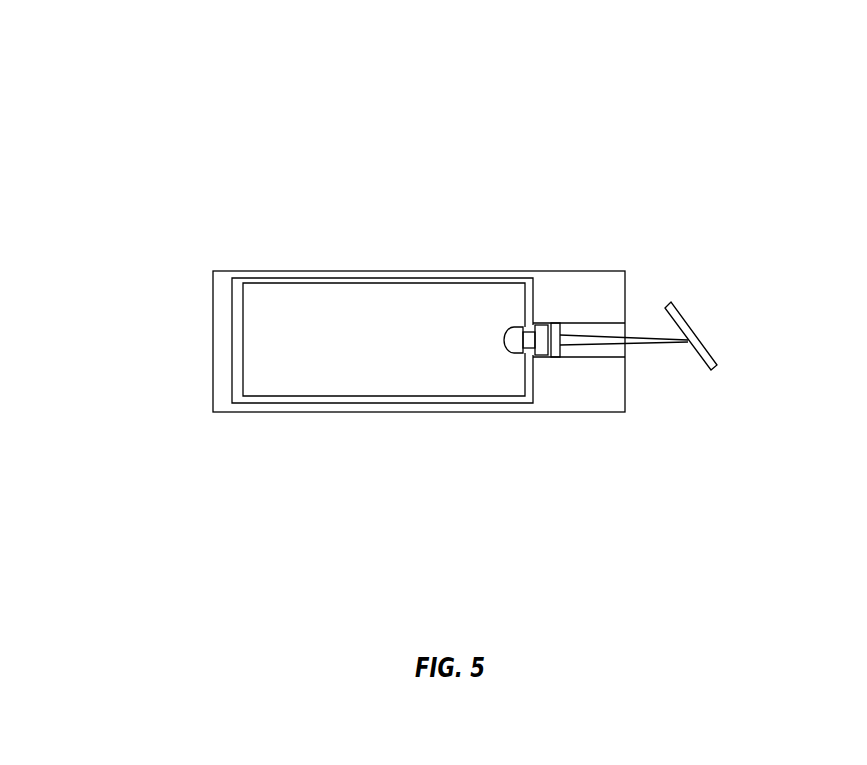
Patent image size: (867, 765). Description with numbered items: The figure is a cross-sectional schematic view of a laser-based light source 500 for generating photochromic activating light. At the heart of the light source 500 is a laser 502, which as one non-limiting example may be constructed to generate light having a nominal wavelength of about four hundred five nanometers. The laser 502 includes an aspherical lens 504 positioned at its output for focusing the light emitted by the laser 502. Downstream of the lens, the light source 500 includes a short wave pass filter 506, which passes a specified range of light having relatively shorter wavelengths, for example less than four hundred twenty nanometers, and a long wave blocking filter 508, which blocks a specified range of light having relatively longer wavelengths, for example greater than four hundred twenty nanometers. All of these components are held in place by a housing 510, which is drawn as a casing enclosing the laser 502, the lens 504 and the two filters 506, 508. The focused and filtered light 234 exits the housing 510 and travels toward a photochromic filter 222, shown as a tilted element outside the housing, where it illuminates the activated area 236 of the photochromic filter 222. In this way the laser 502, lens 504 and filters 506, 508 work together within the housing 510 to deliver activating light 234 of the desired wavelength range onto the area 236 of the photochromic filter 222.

The light source 500 is at (430, 456).
The laser 502 is at (382, 296).
The aspherical lens 504 is at (426, 236).
The short wave pass filter 506 is at (464, 187).
The long wave blocking filter 508 is at (599, 202).
The housing 510 is at (351, 383).
The light 234 is at (620, 262).
The photochromic filter 222 is at (746, 309).
The area 236 is at (630, 418).